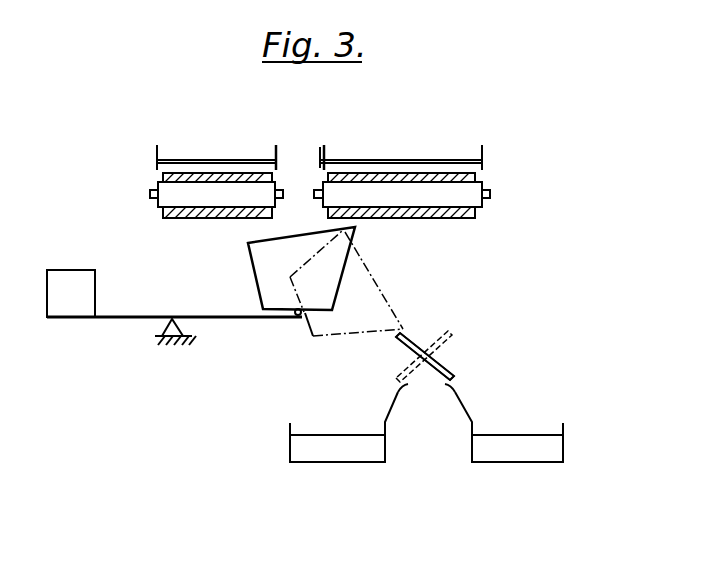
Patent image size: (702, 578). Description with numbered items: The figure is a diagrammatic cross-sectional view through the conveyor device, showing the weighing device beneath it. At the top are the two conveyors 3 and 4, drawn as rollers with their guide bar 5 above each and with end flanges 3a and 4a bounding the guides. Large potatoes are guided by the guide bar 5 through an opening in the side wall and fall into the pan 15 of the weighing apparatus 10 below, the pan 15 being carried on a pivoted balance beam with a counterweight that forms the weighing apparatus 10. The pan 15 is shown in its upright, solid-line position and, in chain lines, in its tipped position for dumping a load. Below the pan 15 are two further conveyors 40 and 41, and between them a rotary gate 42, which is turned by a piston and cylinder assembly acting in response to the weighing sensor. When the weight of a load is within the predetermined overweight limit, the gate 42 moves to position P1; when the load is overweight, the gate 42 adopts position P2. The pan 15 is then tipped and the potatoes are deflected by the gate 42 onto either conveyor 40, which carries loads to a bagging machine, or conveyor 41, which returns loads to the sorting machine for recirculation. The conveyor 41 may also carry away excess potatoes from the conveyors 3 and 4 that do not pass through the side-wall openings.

The conveyor 3 is at (470, 179).
The flange of second roller guide 3a is at (325, 145).
The conveyor 4 is at (165, 177).
The flange of first roller guide 4a is at (277, 143).
The guide bar 5 is at (200, 160).
The weighing apparatus 10 is at (165, 304).
The pan 15 is at (262, 264).
The conveyor 40 is at (325, 452).
The conveyor 41 is at (533, 452).
The rotary gate 42 is at (424, 356).
The gate position P1 is at (450, 343).
The gate position P2 is at (397, 338).